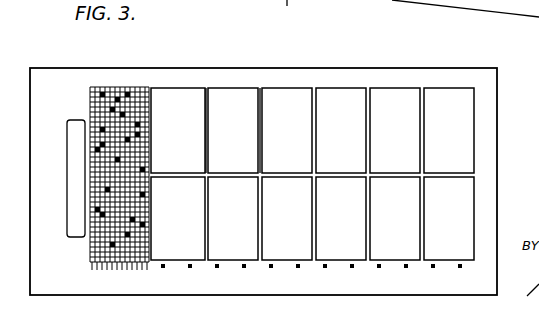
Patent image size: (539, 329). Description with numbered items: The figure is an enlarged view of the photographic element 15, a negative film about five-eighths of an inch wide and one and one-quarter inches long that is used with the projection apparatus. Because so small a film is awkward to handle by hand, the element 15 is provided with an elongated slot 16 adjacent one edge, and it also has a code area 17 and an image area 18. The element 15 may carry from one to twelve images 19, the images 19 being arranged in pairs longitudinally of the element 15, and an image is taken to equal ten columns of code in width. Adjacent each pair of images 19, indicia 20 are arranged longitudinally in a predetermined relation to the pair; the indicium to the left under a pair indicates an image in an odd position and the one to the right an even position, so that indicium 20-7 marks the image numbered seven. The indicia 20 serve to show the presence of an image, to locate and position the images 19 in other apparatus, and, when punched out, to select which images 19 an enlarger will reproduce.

The photographic element 15 is at (344, 73).
The elongated slot 16 is at (78, 122).
The code area 17 is at (146, 86).
The image area 18 is at (480, 100).
The images 19 is at (250, 95).
The indicia 20 is at (244, 270).
The indicium 20-7 is at (326, 270).